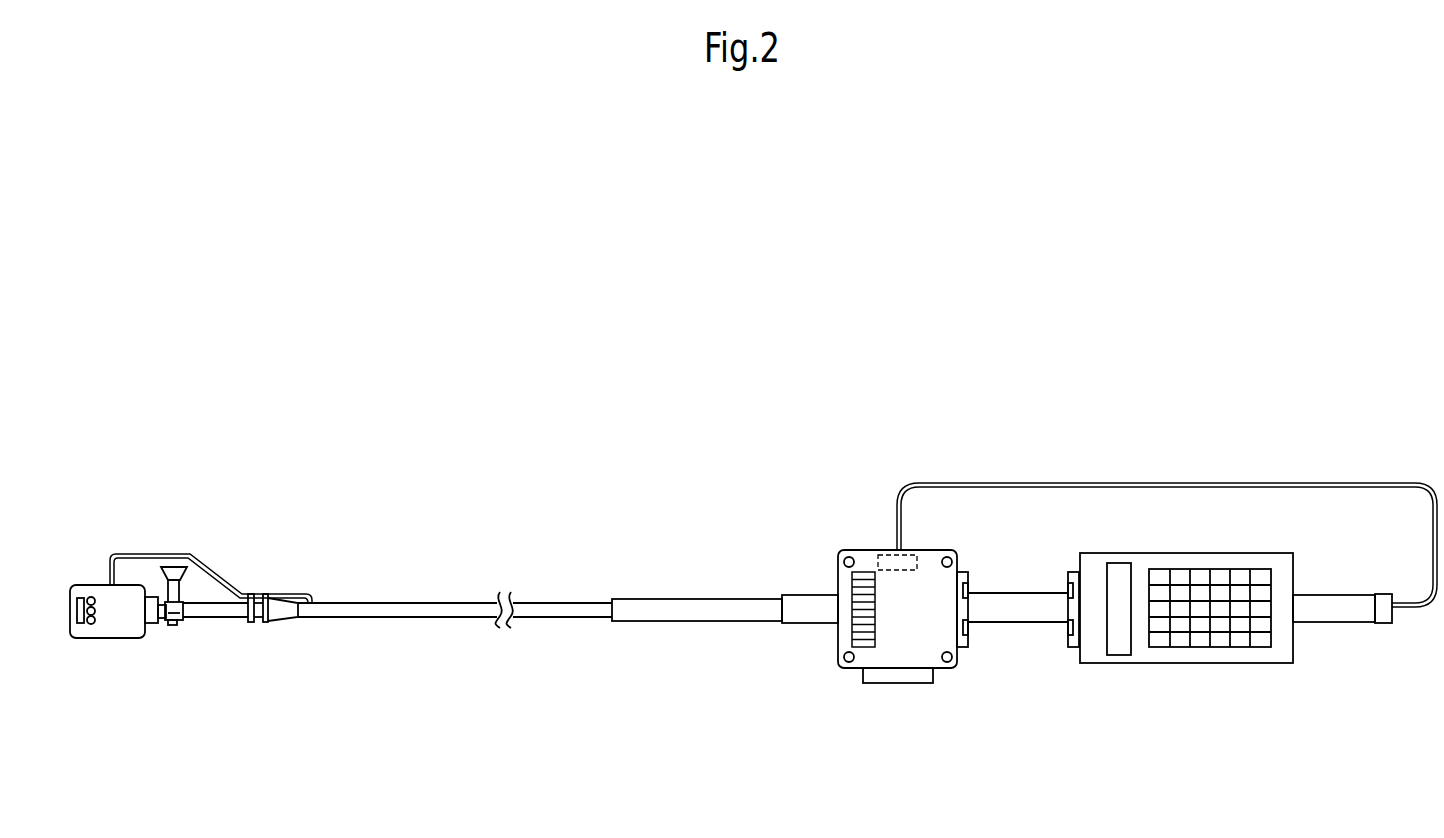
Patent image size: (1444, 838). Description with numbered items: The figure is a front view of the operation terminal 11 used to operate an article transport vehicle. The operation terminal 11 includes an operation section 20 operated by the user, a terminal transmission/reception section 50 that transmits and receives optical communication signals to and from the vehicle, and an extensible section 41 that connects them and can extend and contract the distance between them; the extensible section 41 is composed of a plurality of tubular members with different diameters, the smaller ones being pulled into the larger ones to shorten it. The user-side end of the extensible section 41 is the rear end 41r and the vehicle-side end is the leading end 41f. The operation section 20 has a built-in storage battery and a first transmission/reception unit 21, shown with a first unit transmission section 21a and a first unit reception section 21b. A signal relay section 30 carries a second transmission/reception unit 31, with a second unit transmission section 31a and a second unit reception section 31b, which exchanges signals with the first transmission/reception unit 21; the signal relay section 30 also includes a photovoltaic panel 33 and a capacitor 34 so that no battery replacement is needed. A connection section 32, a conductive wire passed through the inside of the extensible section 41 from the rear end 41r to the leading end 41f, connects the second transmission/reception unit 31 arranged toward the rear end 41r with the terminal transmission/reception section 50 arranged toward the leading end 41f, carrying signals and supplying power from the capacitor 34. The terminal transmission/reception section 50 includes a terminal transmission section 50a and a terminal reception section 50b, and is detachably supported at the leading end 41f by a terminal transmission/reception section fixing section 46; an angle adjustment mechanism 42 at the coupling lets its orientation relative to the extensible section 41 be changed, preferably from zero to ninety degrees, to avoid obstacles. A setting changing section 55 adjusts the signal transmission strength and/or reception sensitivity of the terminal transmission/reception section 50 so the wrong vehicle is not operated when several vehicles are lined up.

The operation terminal 11 is at (791, 233).
The leading end 41f is at (130, 503).
The terminal transmission/reception section 50 is at (125, 590).
The terminal transmission section 50a is at (93, 622).
The terminal reception section 50b is at (79, 597).
The angle adjustment mechanism 42 is at (163, 625).
The terminal transmission/reception section fixing section 46 is at (152, 625).
The extensible section 41 is at (680, 613).
The connection section 32 is at (222, 575).
The signal relay section 30 is at (850, 556).
The capacitor 34 is at (908, 555).
The photovoltaic panel 33 is at (852, 632).
The setting changing section 55 is at (900, 684).
The second transmission/reception unit 31 is at (981, 636).
The second unit transmission section 31a is at (968, 627).
The second unit reception section 31b is at (968, 591).
The first transmission/reception unit 21 is at (1047, 632).
The first unit transmission section 21a is at (1068, 590).
The first unit reception section 21b is at (1068, 627).
The operation section 20 is at (1170, 664).
The rear end 41r is at (1383, 590).